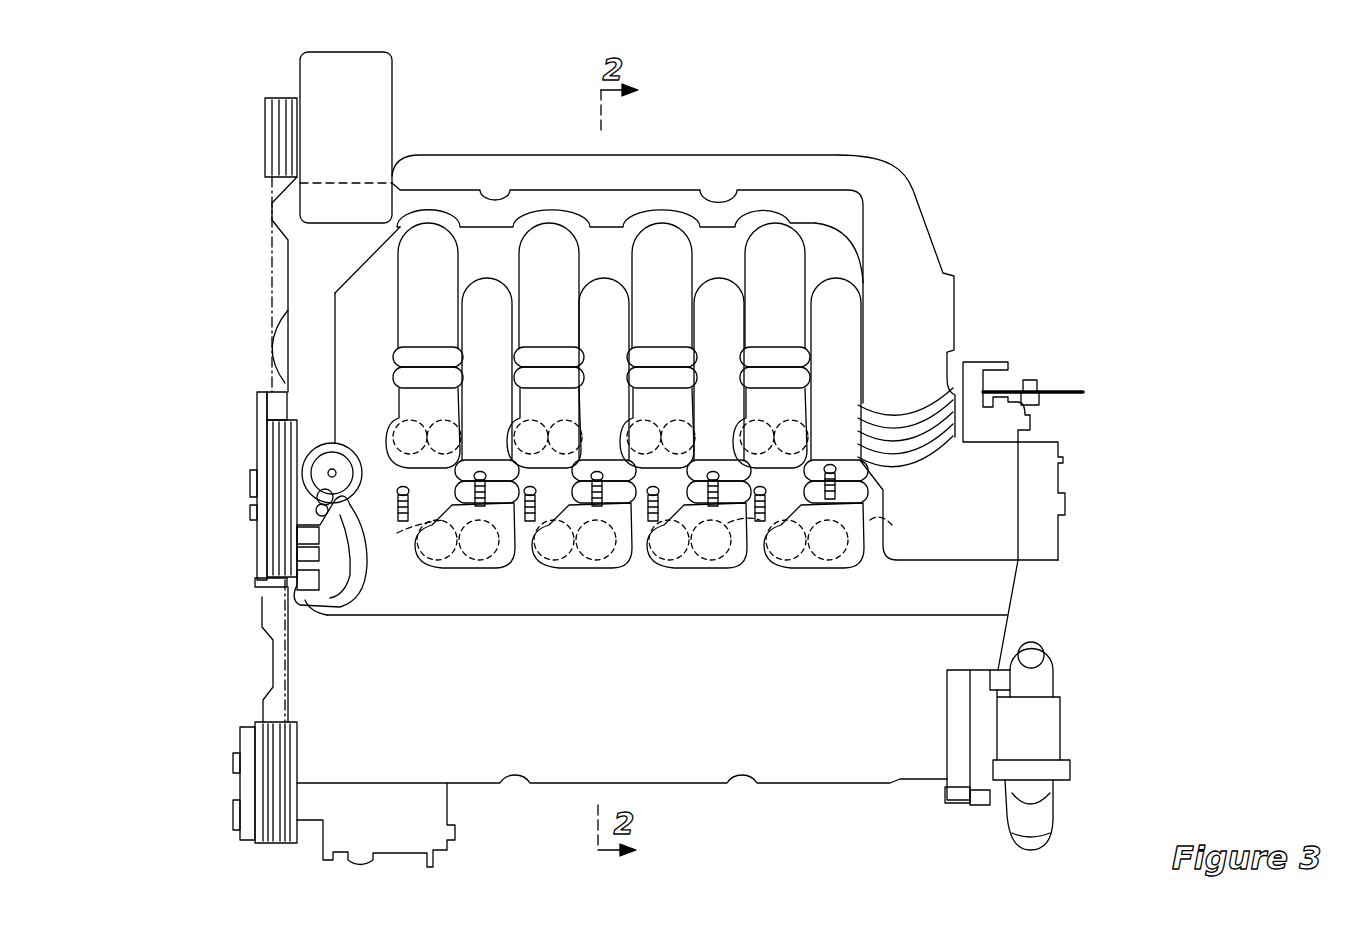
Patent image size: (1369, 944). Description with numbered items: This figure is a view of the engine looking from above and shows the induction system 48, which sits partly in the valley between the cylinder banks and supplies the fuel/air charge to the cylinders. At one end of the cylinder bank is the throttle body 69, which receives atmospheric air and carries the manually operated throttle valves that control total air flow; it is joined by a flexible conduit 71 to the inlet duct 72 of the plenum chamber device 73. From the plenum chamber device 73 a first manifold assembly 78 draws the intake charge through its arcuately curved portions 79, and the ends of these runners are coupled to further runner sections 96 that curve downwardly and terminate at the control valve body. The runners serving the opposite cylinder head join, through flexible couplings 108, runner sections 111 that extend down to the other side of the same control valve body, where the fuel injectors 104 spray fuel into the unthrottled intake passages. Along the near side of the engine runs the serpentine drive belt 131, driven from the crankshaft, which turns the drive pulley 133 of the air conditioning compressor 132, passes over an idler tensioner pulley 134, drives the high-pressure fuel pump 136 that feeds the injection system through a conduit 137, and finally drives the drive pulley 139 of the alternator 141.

The induction system 48 is at (873, 282).
The throttle body 69 is at (978, 477).
The flexible conduit 71 is at (968, 398).
The inlet duct 72 is at (955, 290).
The plenum chamber device 73 is at (428, 152).
The first manifold assembly 78 is at (425, 247).
The arcuately curved portions 79 is at (773, 240).
The runner sections 96 is at (487, 298).
The fuel injectors 104 is at (397, 535).
The flexible couplings 108 is at (860, 483).
The runner sections 111 is at (463, 572).
The serpentine drive belt 131 is at (262, 313).
The air conditioning compressor 132 is at (300, 853).
The drive pulley 133 is at (265, 800).
The idler tensioner pulley 134 is at (268, 550).
The high-pressure fuel pump 136 is at (257, 437).
The conduit 137 is at (340, 605).
The drive pulley 139 is at (266, 117).
The alternator 141 is at (290, 66).